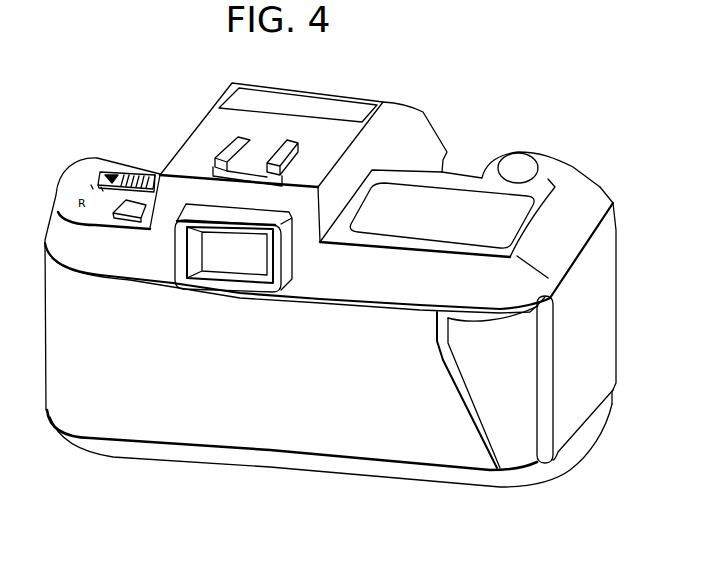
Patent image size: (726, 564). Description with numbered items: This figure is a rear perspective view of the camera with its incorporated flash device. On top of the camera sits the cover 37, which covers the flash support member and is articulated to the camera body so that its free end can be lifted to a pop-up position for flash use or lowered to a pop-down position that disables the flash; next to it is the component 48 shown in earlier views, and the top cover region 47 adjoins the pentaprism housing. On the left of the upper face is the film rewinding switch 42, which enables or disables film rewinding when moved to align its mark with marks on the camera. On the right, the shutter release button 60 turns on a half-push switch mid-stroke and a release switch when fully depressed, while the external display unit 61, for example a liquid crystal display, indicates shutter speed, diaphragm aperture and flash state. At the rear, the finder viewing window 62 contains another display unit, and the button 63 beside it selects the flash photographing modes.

The cover 37 is at (302, 95).
The top cover 47 is at (399, 112).
The accessory shoe 48 is at (227, 152).
The film rewinding switch 42 is at (108, 172).
The external display unit 61 is at (450, 195).
The shutter release button 60 is at (520, 153).
The button 63 is at (127, 215).
The finder viewing window 62 is at (237, 260).